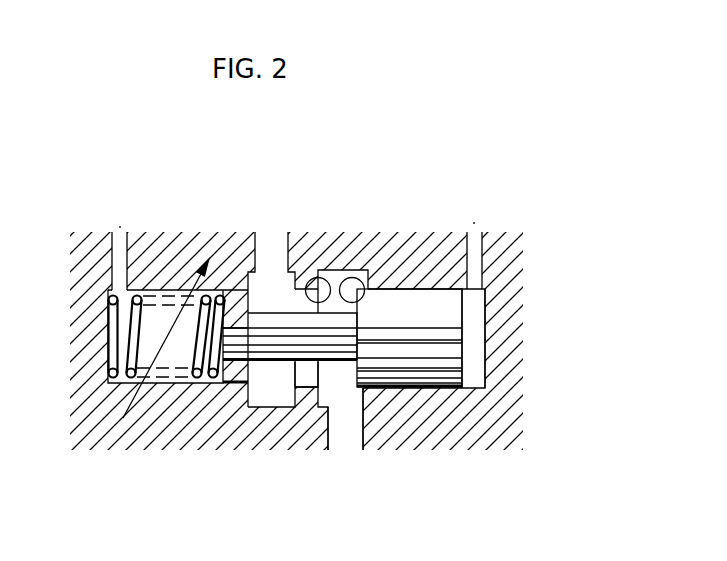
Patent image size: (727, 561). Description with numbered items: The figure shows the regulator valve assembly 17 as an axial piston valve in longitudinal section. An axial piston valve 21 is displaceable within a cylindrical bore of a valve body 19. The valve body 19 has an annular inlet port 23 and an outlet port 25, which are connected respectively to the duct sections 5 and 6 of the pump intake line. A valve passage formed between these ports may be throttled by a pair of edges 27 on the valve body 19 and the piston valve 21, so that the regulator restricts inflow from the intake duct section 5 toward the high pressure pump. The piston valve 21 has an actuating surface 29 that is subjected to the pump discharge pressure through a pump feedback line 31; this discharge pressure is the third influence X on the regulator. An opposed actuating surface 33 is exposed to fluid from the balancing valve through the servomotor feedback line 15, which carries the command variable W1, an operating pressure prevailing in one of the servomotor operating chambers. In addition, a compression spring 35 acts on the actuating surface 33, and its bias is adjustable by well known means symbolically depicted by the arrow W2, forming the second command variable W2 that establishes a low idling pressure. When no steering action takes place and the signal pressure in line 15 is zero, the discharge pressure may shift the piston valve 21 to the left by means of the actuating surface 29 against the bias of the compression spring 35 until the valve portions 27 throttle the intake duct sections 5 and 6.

The intake duct section 5 is at (345, 470).
The intake duct section 6 is at (273, 227).
The servomotor feedback line 15 is at (120, 205).
The regulator valve assembly 17 is at (366, 163).
The valve body 19 is at (410, 289).
The axial piston valve 21 is at (417, 350).
The annular inlet port 23 is at (336, 383).
The outlet port 25 is at (272, 392).
The edges 27 is at (355, 276).
The actuating surface 29 is at (462, 333).
The pump feedback line 31 is at (474, 207).
The opposed actuating surface 33 is at (216, 356).
The compression spring 35 is at (118, 352).
The command variable W1 is at (112, 166).
The command variable W2 is at (166, 374).
The third influence X is at (473, 164).